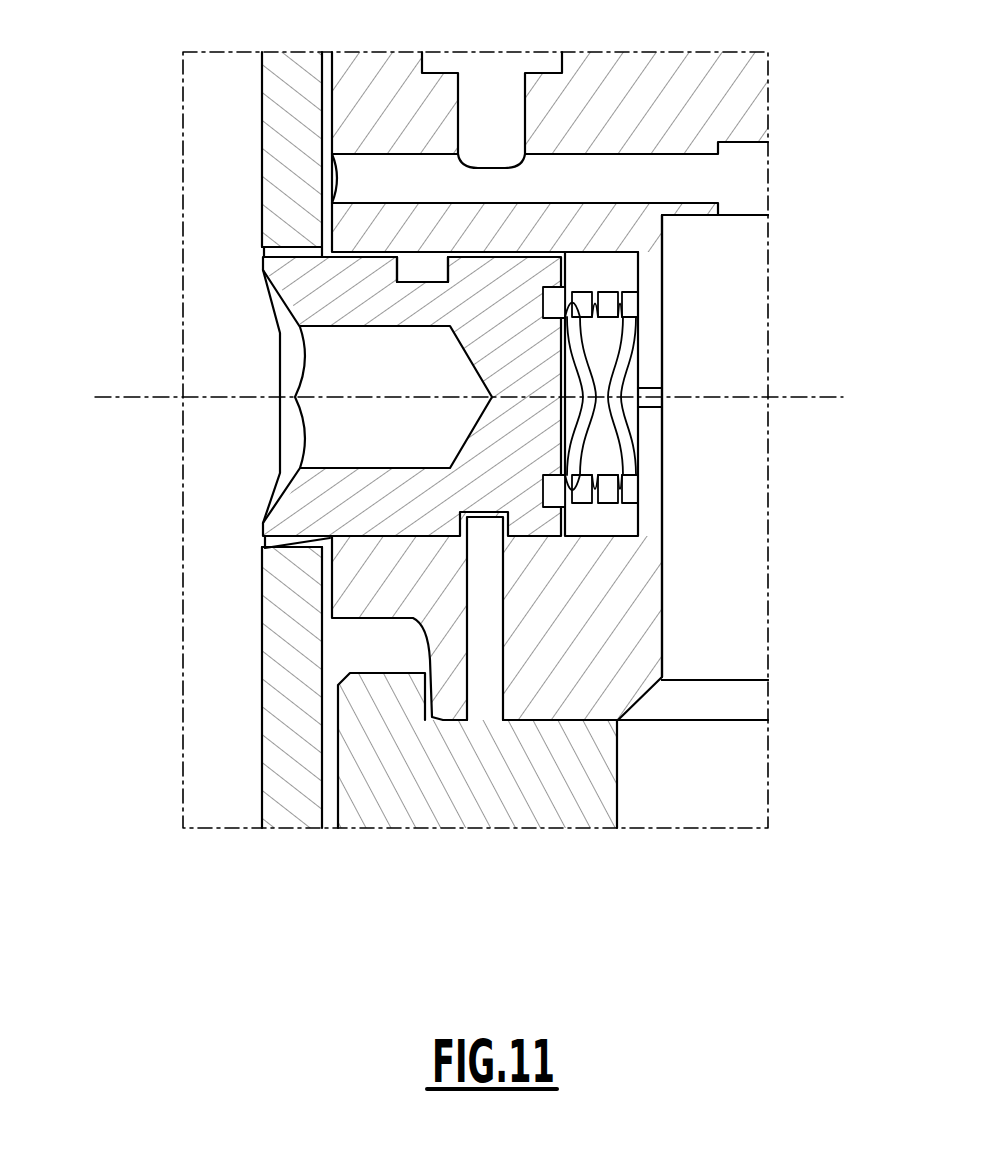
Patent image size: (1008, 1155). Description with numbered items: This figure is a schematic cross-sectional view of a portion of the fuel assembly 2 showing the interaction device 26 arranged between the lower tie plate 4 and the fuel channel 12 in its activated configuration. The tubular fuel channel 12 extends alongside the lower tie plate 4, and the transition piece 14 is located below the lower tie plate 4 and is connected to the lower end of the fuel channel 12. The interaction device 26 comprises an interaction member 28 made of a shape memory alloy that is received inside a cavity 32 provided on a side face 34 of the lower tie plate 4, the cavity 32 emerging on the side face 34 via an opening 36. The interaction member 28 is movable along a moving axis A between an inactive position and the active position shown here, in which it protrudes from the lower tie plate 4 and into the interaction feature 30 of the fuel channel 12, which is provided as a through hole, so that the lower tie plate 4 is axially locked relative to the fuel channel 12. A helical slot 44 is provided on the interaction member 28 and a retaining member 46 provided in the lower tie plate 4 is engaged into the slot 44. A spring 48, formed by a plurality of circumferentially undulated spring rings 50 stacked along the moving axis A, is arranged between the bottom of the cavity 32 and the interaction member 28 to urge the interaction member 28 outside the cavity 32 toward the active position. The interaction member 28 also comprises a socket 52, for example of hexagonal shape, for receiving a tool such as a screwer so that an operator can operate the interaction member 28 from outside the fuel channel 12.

The fuel assembly 2 is at (140, 61).
The lower tie plate 4 is at (758, 107).
The fuel channel 12 is at (285, 137).
The transition piece 14 is at (408, 780).
The interaction device 26 is at (112, 253).
The interaction member 28 is at (307, 295).
The interaction feature 30 is at (300, 258).
The cavity 32 is at (600, 523).
The side face 34 is at (332, 582).
The opening 36 is at (330, 539).
The helical slot 44 is at (430, 267).
The retaining member 46 is at (487, 597).
The spring 48 is at (680, 264).
The spring ring 50 is at (600, 432).
The socket 52 is at (340, 435).
The moving axis A is at (811, 397).